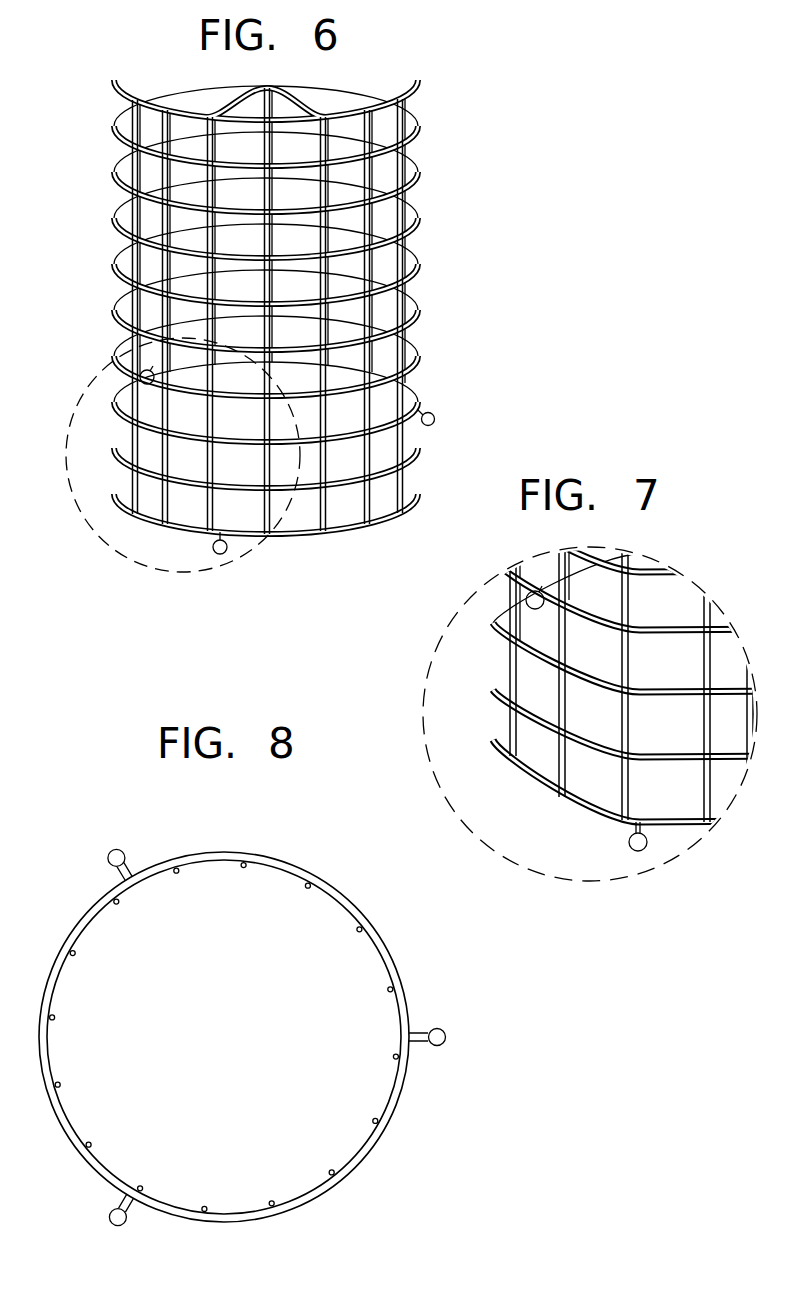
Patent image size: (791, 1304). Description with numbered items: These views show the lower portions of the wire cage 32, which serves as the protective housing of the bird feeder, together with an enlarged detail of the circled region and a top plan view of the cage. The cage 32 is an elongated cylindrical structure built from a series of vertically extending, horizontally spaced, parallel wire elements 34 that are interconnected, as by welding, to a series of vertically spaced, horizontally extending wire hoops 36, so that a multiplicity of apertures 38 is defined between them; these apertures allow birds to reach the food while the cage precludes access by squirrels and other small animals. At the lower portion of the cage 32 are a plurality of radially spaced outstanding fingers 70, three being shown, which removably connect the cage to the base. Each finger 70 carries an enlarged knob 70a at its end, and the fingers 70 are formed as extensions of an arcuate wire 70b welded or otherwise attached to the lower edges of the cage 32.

In FIG. 6, the cylindrical cage 32 is at (316, 354).
In FIG. 8, the cylindrical cage 32 is at (249, 1033).
In FIG. 6, the wire elements 34 is at (417, 343).
In FIG. 8, the wire elements 34 is at (55, 1015).
In FIG. 6, the wire hoops 36 is at (380, 140).
In FIG. 8, the wire hoops 36 is at (56, 1113).
In FIG. 6, the apertures 38 is at (345, 500).
In FIG. 6, the fingers 70 is at (430, 413).
In FIG. 7, the fingers 70 is at (615, 763).
In FIG. 8, the fingers 70 is at (268, 1033).
In FIG. 7, the knob 70a is at (646, 848).
In FIG. 8, the knob 70a is at (108, 850).
In FIG. 7, the arcuate wire 70b is at (634, 663).